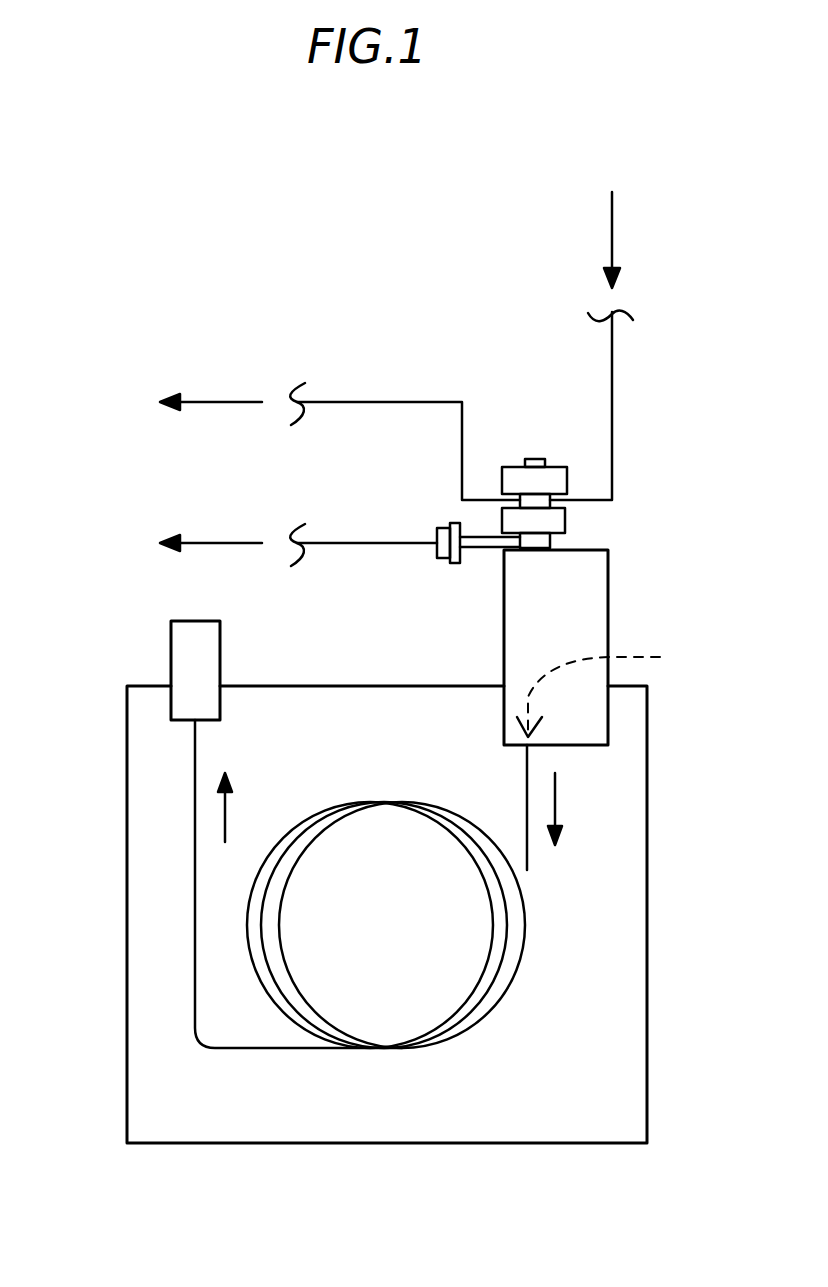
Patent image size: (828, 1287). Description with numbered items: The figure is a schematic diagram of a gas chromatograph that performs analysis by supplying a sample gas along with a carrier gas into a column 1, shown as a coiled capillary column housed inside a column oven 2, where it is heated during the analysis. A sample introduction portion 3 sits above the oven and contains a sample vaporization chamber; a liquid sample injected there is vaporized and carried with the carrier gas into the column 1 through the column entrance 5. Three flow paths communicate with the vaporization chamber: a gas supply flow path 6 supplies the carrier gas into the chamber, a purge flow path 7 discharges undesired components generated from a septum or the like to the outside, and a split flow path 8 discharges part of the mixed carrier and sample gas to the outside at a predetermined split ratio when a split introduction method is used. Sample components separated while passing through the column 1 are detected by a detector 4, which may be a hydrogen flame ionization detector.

The column 1 is at (485, 1015).
The column oven 2 is at (127, 988).
The sample introduction portion 3 is at (608, 590).
The detector 4 is at (171, 651).
The column entrance 5 is at (600, 689).
The gas supply flow path 6 is at (612, 390).
The purge flow path 7 is at (363, 402).
The split flow path 8 is at (360, 543).